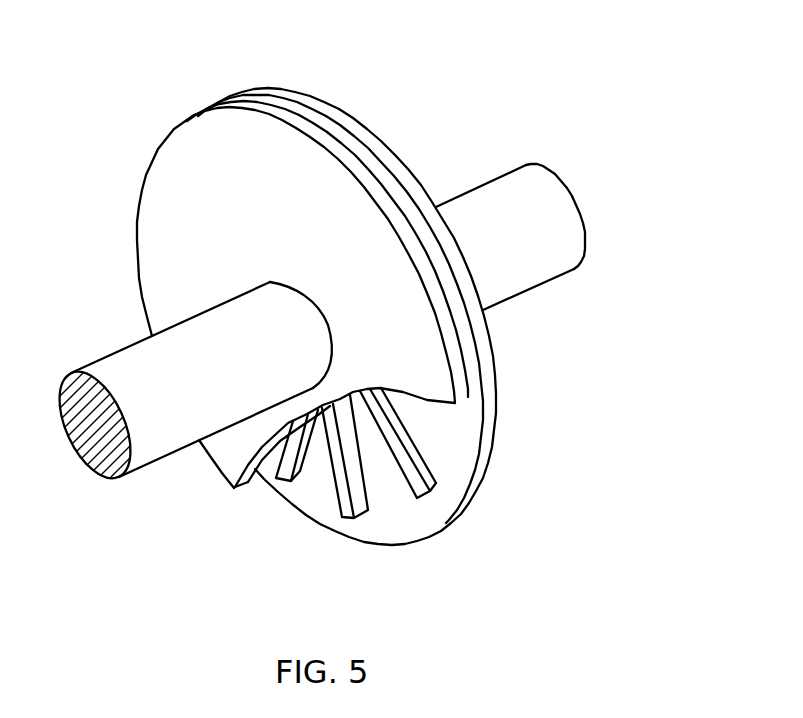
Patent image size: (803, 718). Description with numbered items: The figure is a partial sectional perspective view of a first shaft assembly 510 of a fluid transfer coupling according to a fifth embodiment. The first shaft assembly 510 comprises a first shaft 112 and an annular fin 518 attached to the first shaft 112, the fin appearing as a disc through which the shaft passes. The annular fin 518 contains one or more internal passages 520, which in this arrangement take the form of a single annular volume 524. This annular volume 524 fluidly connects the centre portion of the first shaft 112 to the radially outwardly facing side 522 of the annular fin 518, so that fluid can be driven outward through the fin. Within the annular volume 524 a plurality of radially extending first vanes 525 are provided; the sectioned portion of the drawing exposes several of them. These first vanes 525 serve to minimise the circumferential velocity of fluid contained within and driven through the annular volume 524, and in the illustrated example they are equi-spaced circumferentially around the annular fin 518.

The first shaft assembly 510 is at (497, 80).
The annular fin 518 is at (150, 183).
The internal passages 520 is at (356, 153).
The radially outwardly facing side 522 is at (320, 103).
The annular volume 524 is at (400, 195).
The first shaft 112 is at (127, 354).
The first vanes 525 is at (410, 487).